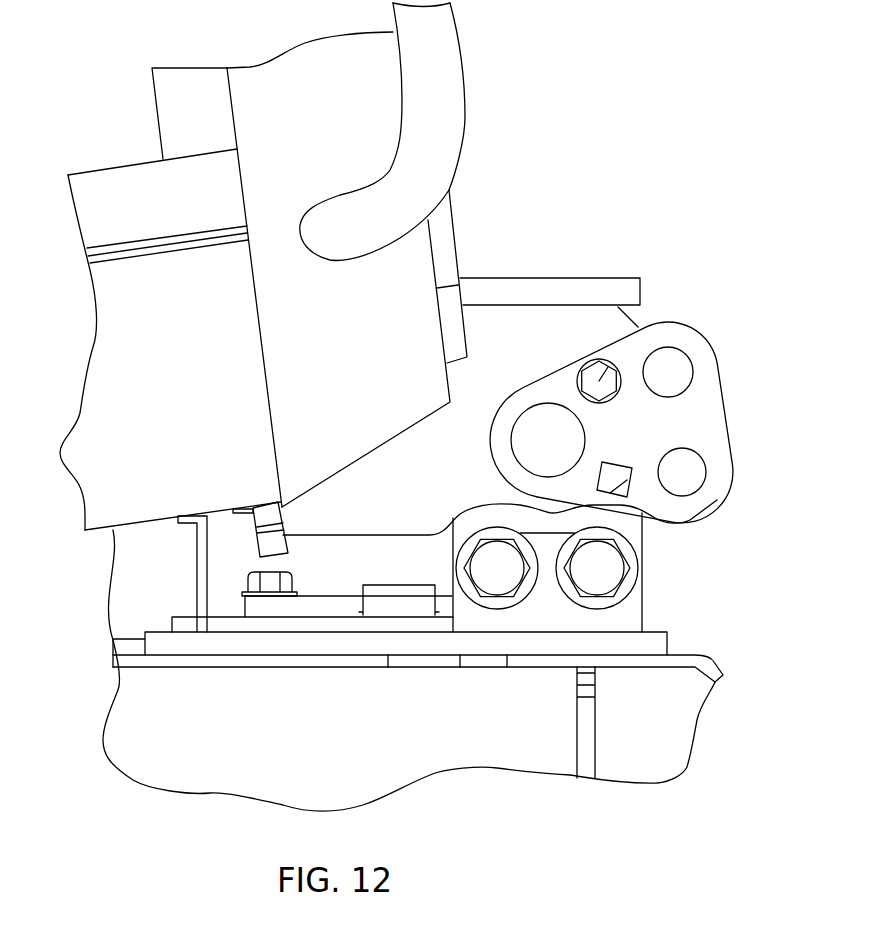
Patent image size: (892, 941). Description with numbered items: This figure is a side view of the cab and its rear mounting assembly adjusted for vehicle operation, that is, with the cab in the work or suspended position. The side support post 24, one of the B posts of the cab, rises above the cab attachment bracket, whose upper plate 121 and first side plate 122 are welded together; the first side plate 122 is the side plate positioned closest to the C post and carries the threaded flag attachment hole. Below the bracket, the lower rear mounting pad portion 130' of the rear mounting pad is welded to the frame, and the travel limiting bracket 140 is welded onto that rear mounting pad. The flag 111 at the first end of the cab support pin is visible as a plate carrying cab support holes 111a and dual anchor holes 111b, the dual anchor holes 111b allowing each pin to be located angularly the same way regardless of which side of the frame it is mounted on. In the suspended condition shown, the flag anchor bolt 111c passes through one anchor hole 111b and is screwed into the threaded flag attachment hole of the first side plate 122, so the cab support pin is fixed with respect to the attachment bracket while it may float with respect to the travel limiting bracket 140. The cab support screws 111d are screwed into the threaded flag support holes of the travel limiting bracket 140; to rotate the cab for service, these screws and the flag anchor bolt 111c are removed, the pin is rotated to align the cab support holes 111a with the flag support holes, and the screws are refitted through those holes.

The side support post 24 is at (348, 344).
The first side plate 122 is at (432, 491).
The upper plate 121 is at (558, 282).
The flag 111 is at (731, 465).
The cab support holes 111a is at (707, 452).
The anchor holes 111b is at (617, 462).
The flag anchor bolt 111c is at (662, 323).
The cab support screws 111d is at (590, 588).
The travel limiting bracket 140 is at (641, 609).
The lower rear mounting pad portion 130' is at (450, 647).